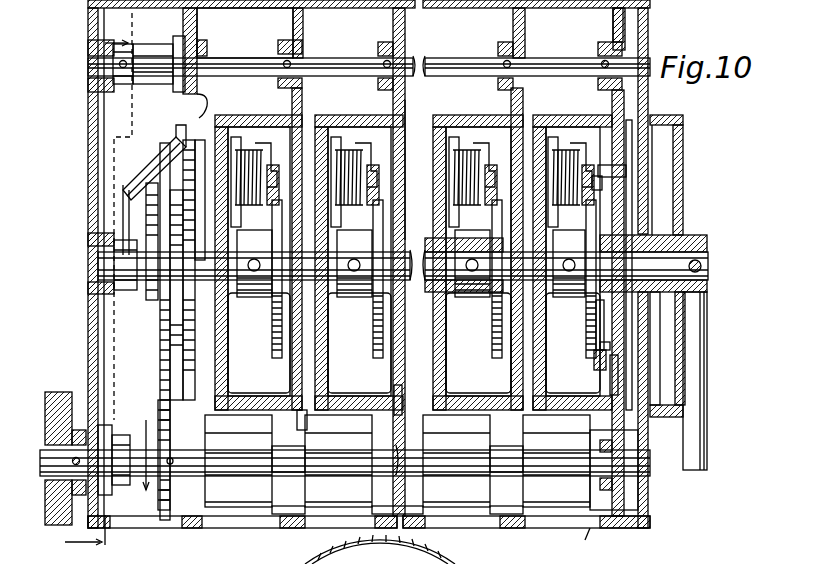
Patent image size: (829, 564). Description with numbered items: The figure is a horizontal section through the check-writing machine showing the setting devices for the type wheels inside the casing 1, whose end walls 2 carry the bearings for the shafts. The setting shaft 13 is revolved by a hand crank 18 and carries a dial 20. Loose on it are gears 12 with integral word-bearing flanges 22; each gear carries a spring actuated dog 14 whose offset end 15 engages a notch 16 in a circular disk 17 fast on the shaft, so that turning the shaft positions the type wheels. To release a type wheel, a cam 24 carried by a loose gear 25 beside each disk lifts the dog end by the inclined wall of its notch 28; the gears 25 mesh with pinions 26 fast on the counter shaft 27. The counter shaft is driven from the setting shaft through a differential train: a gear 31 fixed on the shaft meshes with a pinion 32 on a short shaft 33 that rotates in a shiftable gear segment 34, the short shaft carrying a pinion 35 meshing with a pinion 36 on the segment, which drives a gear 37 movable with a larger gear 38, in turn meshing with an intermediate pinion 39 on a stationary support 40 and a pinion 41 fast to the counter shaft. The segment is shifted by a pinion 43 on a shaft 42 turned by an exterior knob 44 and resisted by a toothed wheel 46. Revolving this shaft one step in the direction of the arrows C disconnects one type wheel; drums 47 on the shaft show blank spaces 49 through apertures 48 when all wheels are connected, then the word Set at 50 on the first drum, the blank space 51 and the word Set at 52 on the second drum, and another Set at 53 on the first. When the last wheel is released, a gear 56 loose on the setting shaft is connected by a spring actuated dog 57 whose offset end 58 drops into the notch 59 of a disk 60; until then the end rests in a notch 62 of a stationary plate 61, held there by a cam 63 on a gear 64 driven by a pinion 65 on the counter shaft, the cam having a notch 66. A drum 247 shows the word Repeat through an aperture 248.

The casing 1 is at (280, 33).
The end walls 2 is at (90, 185).
The gears 12 is at (295, 125).
The setting shaft 13 is at (72, 290).
The spring actuated dogs 14 is at (257, 150).
The offset ends 15 is at (288, 148).
The notches 16 is at (411, 253).
The circular disks 17 is at (270, 335).
The hand crank 18 is at (700, 438).
The dial 20 is at (685, 410).
The flanges 22 is at (352, 117).
The cams 24 is at (413, 351).
The gears 25 is at (400, 396).
The pinions 26 is at (518, 20).
The counter shaft 27 is at (453, 70).
The notches 28 is at (416, 170).
The gear 31 is at (150, 207).
The pinion 32 is at (158, 320).
The short shaft 33 is at (112, 263).
The shiftable gear segment 34 is at (158, 393).
The pinion 35 is at (188, 330).
The pinion 36 is at (198, 374).
The gear 37 is at (158, 196).
The larger gear 38 is at (210, 103).
The intermediate pinion 39 is at (182, 130).
The stationary support 40 is at (172, 100).
The pinion 41 is at (186, 32).
The shaft 42 is at (506, 474).
The pinion 43 is at (178, 512).
The knob 44 is at (60, 526).
The toothed wheel 46 is at (120, 502).
The drums 47 is at (348, 501).
The apertures 48 is at (250, 528).
The blank spaces 49 is at (408, 461).
The word "Set" 50 is at (288, 459).
The blank space 51 is at (349, 469).
The word "Set" 52 is at (376, 450).
The word "Set" 53 is at (205, 438).
The gear 56 is at (594, 340).
The spring actuated dog 57 is at (668, 120).
The offset end 58 is at (630, 170).
The notch 59 is at (640, 178).
The disk 60 is at (596, 362).
The stationary plate 61 is at (645, 165).
The notch 62 is at (581, 197).
The cam 63 is at (605, 348).
The gear 64 is at (615, 382).
The pinion 65 is at (610, 24).
The notch 66 is at (605, 190).
The drum 247 is at (614, 475).
The aperture 248 is at (570, 545).
The arrows C is at (142, 465).